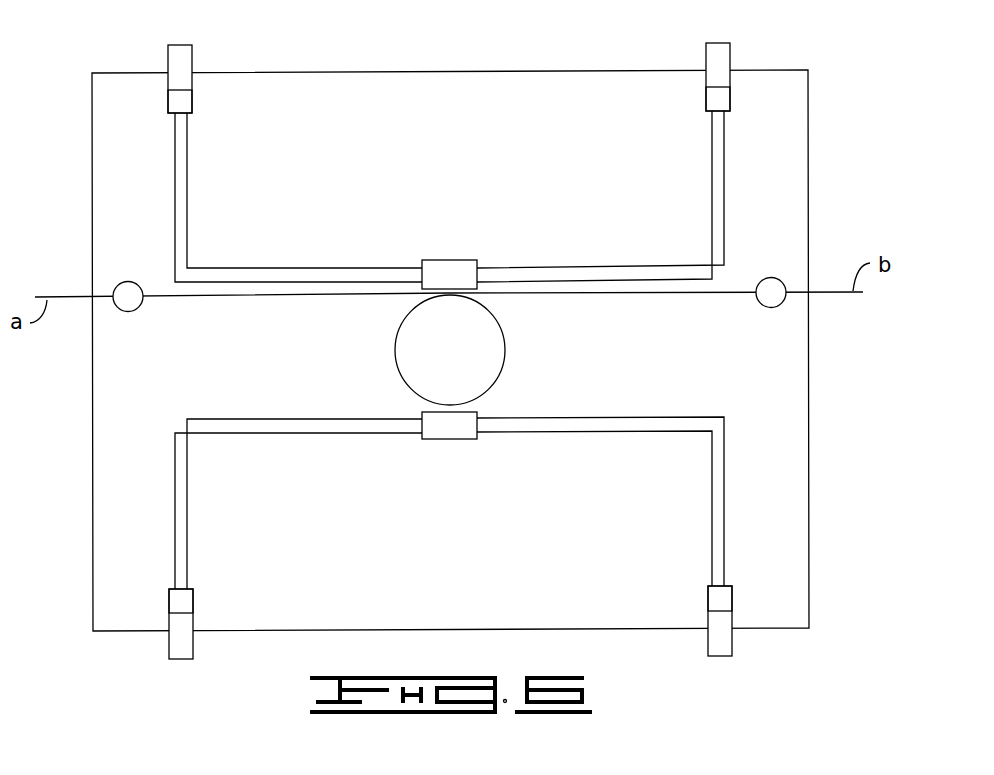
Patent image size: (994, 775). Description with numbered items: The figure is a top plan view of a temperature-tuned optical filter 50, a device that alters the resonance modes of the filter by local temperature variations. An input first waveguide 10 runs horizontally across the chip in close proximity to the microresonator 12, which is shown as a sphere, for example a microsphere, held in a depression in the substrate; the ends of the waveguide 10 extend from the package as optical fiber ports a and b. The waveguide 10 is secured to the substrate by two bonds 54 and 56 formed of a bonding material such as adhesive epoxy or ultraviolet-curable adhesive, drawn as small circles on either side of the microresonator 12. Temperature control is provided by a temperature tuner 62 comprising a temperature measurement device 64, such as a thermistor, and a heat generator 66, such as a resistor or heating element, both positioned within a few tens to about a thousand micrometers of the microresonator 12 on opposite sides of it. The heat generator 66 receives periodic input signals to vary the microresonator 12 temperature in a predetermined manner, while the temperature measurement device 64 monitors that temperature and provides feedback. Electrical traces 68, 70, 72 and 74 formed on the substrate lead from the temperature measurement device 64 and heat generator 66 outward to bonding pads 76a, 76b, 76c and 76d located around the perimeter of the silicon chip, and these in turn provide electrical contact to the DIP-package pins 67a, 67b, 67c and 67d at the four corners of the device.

The input first waveguide 10 is at (104, 296).
The microresonator 12 is at (400, 372).
The temperature-tuned optical filter 50 is at (840, 152).
The bond 54 is at (128, 312).
The bond 56 is at (768, 307).
The temperature tuner 62 is at (449, 500).
The temperature measurement device 64 is at (450, 260).
The heat generator 66 is at (447, 440).
The pin 67a is at (192, 50).
The pin 67b is at (730, 48).
The pin 67c is at (168, 649).
The pin 67d is at (732, 646).
The electrical trace 68 is at (275, 268).
The electrical trace 70 is at (585, 267).
The electrical trace 72 is at (273, 433).
The electrical trace 74 is at (592, 433).
The bonding pad 76a is at (192, 102).
The bonding pad 76b is at (706, 96).
The bonding pad 76c is at (193, 600).
The bonding pad 76d is at (708, 596).